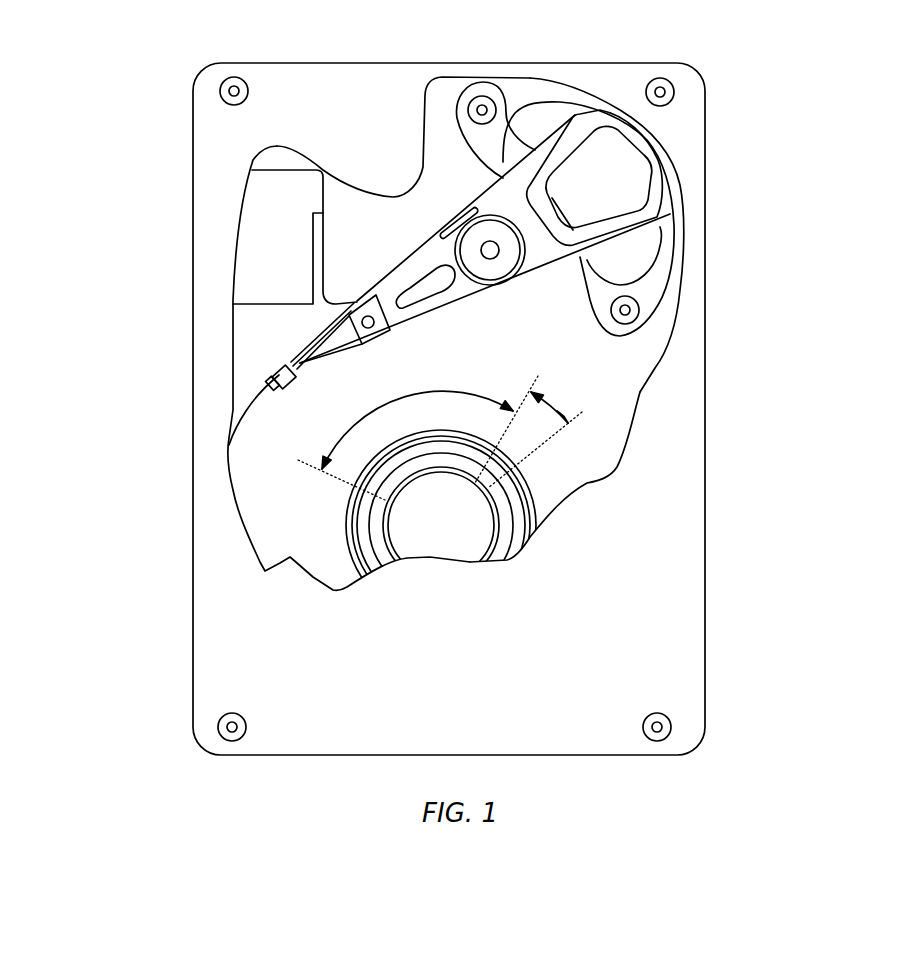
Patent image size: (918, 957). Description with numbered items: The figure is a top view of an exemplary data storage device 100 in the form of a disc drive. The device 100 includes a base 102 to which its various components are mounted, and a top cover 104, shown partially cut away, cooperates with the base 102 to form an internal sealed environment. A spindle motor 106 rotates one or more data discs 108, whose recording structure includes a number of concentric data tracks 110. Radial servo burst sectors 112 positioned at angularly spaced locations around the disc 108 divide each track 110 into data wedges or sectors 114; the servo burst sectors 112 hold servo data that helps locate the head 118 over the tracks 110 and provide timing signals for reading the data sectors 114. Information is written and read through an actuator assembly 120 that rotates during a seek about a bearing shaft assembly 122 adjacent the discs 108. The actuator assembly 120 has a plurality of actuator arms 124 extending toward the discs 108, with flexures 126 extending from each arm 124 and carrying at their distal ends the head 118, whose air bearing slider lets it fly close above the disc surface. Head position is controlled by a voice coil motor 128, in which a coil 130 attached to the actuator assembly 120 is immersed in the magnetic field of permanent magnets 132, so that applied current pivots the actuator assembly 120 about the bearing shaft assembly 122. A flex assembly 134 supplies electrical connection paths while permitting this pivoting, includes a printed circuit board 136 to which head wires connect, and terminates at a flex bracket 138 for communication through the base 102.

The data storage device 100 is at (170, 52).
The base 102 is at (247, 320).
The top cover 104 is at (247, 635).
The spindle motor 106 is at (440, 530).
The data disc 108 is at (577, 463).
The data track 110 is at (345, 532).
The servo burst sector 112 is at (550, 400).
The data sector 114 is at (423, 409).
The head 118 is at (271, 380).
The actuator assembly 120 is at (455, 290).
The bearing shaft assembly 122 is at (490, 250).
The actuator arm 124 is at (432, 313).
The flexure 126 is at (308, 362).
The voice coil motor 128 is at (543, 70).
The coil 130 is at (660, 180).
The permanent magnet 132 is at (517, 135).
The flex assembly 134 is at (407, 257).
The printed circuit board 136 is at (428, 178).
The flex bracket 138 is at (268, 230).